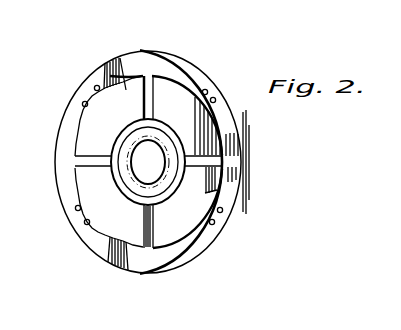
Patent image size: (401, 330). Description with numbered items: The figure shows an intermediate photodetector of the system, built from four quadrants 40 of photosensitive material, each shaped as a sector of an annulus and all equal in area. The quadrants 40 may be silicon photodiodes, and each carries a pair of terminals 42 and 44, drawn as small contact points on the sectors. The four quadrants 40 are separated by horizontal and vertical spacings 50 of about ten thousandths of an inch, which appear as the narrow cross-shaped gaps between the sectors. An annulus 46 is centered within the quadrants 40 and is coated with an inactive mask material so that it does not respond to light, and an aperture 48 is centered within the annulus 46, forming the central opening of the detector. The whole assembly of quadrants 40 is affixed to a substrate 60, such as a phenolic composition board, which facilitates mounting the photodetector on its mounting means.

The quadrant 40 is at (131, 93).
The terminal 42 is at (97, 120).
The terminal 44 is at (102, 97).
The annulus 46 is at (233, 156).
The aperture 48 is at (146, 155).
The spacing 50 is at (151, 77).
The substrate 60 is at (176, 60).